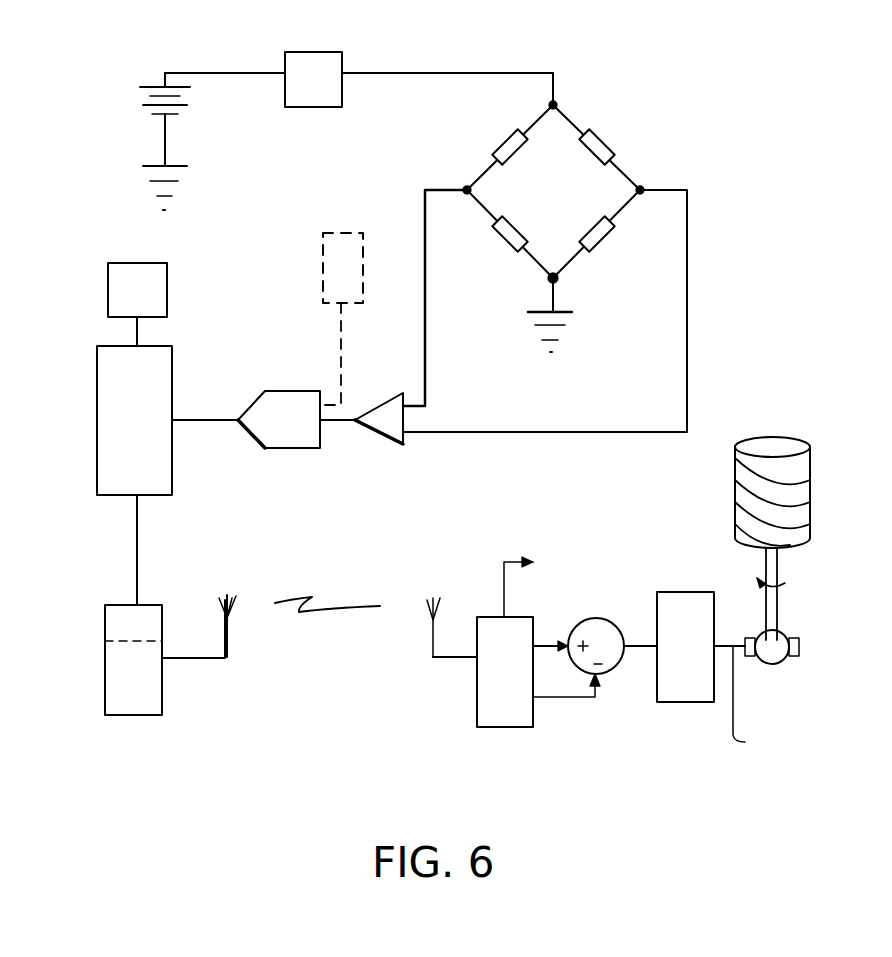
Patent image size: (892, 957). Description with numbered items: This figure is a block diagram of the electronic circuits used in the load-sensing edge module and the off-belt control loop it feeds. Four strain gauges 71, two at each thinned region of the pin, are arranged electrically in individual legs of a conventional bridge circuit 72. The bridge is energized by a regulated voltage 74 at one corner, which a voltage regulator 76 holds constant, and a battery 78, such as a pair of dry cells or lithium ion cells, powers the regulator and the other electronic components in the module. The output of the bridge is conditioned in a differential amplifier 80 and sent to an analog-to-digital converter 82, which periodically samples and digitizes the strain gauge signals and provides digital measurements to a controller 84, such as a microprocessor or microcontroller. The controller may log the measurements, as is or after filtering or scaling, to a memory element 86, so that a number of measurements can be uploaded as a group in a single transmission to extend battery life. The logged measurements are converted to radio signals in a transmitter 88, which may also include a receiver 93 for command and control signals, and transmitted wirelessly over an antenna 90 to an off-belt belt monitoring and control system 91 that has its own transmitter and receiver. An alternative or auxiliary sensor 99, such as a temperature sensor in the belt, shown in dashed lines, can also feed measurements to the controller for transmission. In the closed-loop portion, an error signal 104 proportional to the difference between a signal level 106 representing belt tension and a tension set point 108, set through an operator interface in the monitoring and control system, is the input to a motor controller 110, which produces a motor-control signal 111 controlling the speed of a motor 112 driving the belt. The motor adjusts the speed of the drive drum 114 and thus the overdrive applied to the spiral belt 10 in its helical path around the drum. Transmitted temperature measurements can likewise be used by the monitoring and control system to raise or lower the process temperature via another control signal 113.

The spiral belt 10 is at (750, 492).
The drive drum 114 is at (735, 472).
The strain gauge 71 is at (503, 142).
The bridge circuit 72 is at (556, 205).
The regulated voltage 74 is at (518, 70).
The voltage regulator 76 is at (320, 52).
The battery 78 is at (190, 99).
The differential amplifier 80 is at (385, 427).
The analog-to-digital converter 82 is at (283, 440).
The controller 84 is at (168, 374).
The memory element 86 is at (163, 287).
The transmitter 88 is at (143, 674).
The antenna 90 is at (229, 617).
The belt monitoring and control system 91 is at (478, 703).
The receiver 93 is at (110, 627).
The auxiliary sensor 99 is at (322, 255).
The error signal 104 is at (637, 647).
The signal level 106 is at (545, 643).
The tension set point 108 is at (568, 698).
The motor controller 110 is at (693, 694).
The motor-control signal 111 is at (758, 701).
The motor 112 is at (772, 665).
The control signal 113 is at (520, 560).